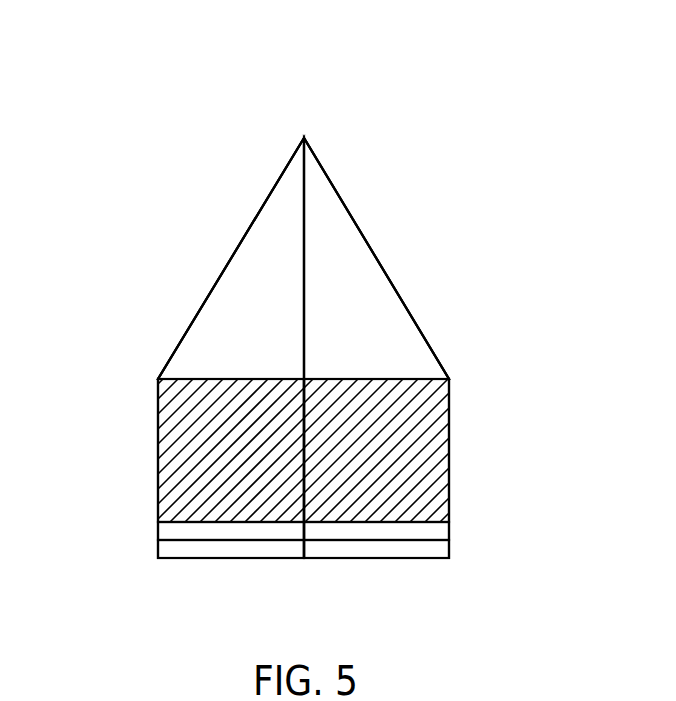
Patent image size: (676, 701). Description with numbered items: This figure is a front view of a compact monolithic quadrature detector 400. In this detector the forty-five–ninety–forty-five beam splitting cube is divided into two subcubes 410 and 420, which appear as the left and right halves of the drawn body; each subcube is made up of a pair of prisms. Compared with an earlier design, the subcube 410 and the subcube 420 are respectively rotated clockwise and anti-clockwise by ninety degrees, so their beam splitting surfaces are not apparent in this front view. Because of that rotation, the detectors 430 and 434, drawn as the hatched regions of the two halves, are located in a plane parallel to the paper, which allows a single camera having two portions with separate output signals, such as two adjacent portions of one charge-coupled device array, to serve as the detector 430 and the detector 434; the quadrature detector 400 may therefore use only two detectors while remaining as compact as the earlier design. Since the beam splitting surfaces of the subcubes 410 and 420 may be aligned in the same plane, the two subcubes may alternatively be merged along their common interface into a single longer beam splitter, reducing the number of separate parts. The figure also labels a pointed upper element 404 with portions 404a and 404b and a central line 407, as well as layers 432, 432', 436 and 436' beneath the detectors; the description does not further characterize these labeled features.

The monolithic quadrature detector 400 is at (458, 54).
The tip / conical portion 404 is at (452, 137).
The first face of conical portion 404a is at (288, 192).
The second face of conical portion 404b is at (322, 195).
The centerline / axis 407 is at (305, 277).
The subcube 410 is at (116, 471).
The subcube 420 is at (492, 472).
The detector 430 is at (195, 428).
The detector 434 is at (430, 422).
The first base layer 432 is at (205, 586).
The first intermediate layer 432' is at (178, 544).
The second base layer 436 is at (409, 564).
The second intermediate layer 436' is at (435, 537).